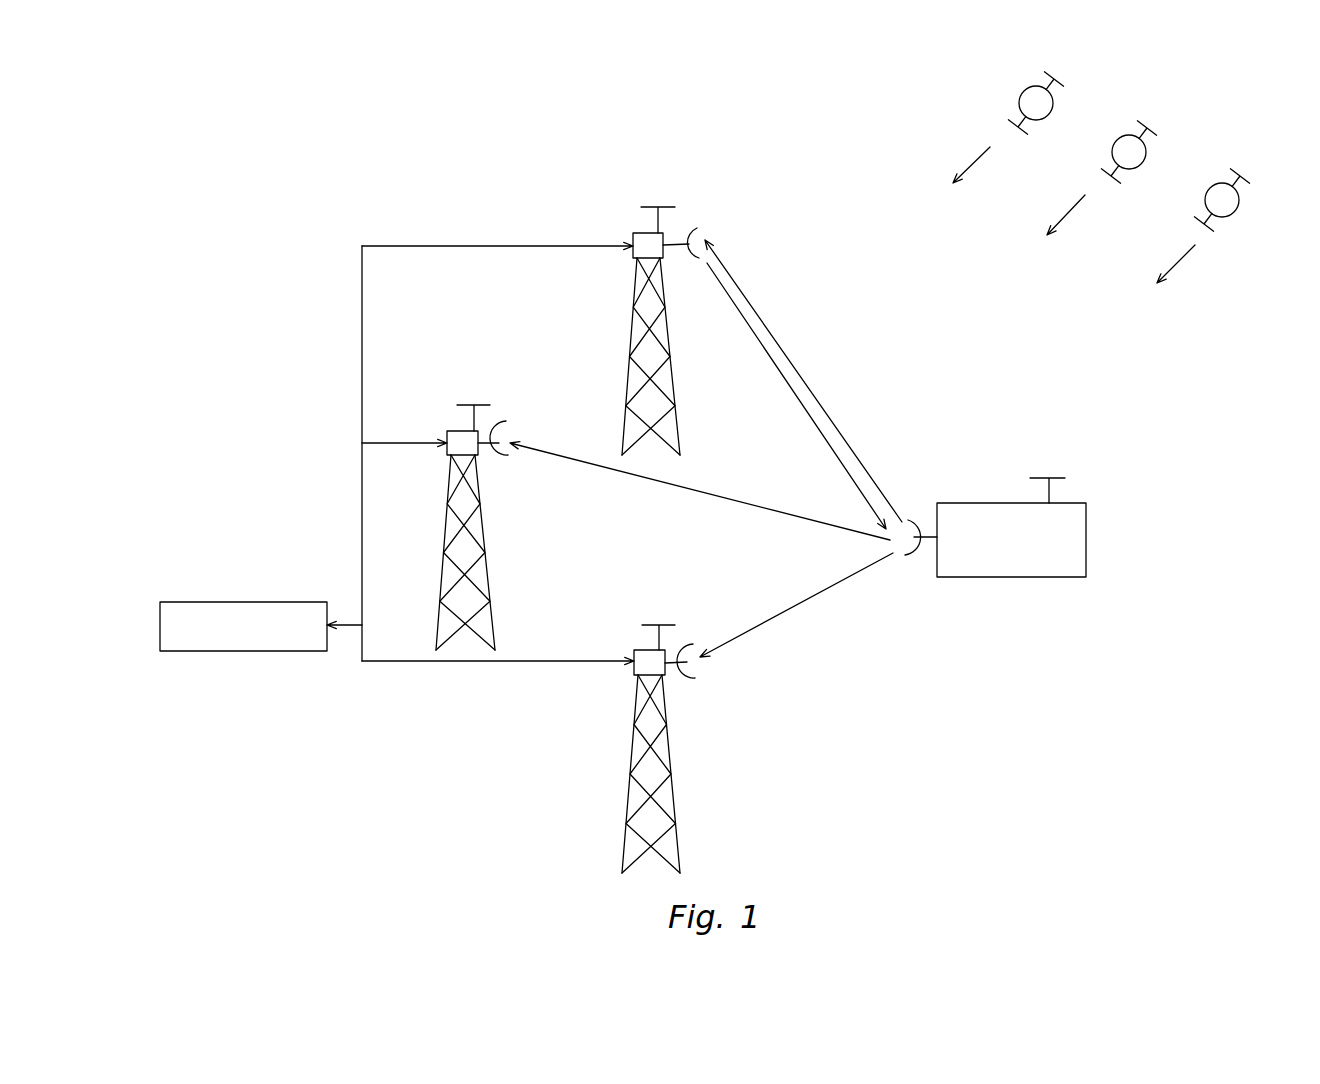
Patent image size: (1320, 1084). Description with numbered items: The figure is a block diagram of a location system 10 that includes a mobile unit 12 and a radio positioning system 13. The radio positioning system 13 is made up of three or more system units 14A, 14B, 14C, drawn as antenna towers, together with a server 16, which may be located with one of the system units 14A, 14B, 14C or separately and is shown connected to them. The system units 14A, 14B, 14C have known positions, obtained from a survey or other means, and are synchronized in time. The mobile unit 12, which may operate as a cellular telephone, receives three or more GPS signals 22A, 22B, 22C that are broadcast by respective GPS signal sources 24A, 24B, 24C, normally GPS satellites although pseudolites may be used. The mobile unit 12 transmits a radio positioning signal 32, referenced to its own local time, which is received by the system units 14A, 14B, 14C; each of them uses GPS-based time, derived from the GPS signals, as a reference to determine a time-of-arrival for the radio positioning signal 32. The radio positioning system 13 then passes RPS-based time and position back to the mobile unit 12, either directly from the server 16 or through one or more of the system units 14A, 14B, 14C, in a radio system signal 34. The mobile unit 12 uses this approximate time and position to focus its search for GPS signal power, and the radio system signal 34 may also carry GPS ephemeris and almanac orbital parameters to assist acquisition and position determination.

The location system 10 is at (280, 180).
The mobile unit 12 is at (985, 503).
The radio positioning system 13 is at (429, 540).
The system unit 14A is at (634, 232).
The system unit 14B is at (458, 430).
The system unit 14C is at (635, 649).
The server 16 is at (240, 601).
The GPS signal 22A is at (970, 163).
The GPS signal 22B is at (1063, 212).
The GPS signal 22C is at (1172, 262).
The GPS signal source 24A is at (1027, 92).
The GPS signal source 24B is at (1118, 140).
The GPS signal source 24C is at (1211, 188).
The radio positioning signal 32 is at (803, 377).
The radio system signal 34 is at (788, 383).